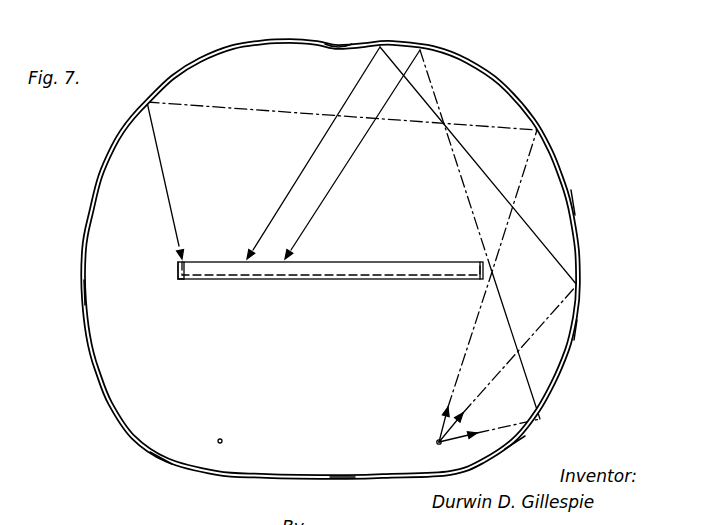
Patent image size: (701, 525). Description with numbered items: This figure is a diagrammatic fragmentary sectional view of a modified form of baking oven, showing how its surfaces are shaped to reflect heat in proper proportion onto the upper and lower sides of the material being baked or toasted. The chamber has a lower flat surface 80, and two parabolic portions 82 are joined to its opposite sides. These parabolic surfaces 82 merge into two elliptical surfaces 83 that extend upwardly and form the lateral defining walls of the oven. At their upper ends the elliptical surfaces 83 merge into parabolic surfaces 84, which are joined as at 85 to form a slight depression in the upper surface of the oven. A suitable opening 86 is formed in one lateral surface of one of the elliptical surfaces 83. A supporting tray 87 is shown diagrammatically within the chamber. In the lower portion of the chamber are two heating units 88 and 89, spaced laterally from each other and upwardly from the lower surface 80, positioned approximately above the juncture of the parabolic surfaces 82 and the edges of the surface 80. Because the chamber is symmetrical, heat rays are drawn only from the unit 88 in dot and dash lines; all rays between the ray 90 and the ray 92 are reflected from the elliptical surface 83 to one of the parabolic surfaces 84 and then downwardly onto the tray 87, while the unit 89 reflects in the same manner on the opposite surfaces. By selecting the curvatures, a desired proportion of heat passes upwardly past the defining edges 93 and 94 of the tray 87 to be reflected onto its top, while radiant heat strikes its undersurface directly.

The lower flat surface 80 is at (341, 475).
The parabolic portions 82 is at (165, 463).
The elliptical surfaces 83 is at (83, 291).
The parabolic surfaces 84 is at (215, 51).
The juncture of parabolic surfaces 85 is at (338, 44).
The opening 86 is at (573, 199).
The supporting tray 87 is at (349, 262).
The heating unit 88 is at (436, 440).
The heating unit 89 is at (224, 441).
The heat ray 90 is at (163, 167).
The heat ray 92 is at (342, 170).
The defining edge of tray 93 is at (177, 268).
The defining edge of tray 94 is at (493, 272).